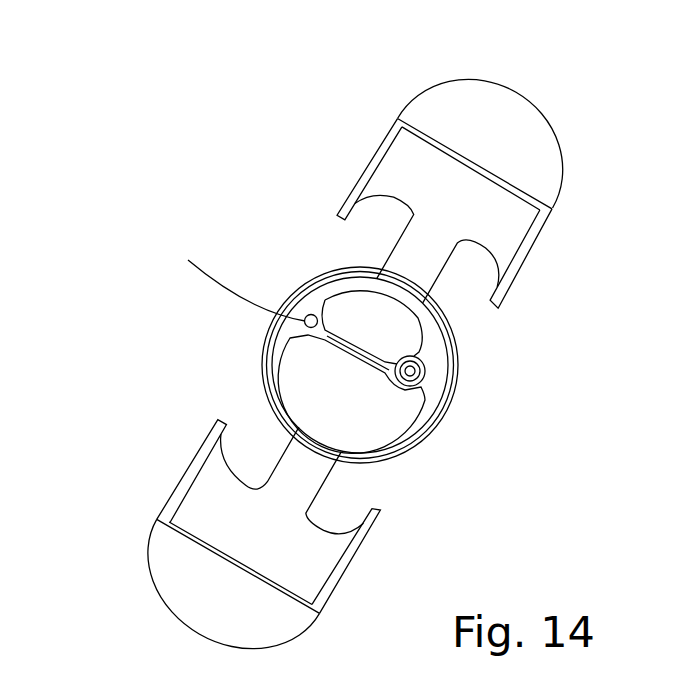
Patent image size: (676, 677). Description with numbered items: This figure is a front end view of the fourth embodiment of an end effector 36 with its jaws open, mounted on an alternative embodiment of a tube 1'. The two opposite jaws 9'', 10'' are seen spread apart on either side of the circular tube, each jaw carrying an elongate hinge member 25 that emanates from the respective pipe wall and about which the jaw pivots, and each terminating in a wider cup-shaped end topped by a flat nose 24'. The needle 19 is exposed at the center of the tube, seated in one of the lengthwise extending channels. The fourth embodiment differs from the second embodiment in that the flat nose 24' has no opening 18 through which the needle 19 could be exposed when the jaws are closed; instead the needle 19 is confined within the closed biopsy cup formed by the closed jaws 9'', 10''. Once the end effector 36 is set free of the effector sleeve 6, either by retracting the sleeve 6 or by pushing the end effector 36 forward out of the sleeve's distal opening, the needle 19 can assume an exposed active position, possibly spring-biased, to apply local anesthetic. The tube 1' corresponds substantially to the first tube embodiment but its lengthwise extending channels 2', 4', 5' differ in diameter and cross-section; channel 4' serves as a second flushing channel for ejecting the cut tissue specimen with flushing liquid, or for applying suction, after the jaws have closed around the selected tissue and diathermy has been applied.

The end effector 36 is at (152, 286).
The effector sleeve 6 is at (447, 388).
The tube 1' is at (397, 365).
The lengthwise extending channel 2' is at (340, 241).
The lengthwise extending channel 4' is at (297, 394).
The lengthwise extending channel 5' is at (417, 439).
The needle 19 is at (415, 385).
The opening 18 is at (420, 370).
The flat nose 24' is at (496, 117).
The jaw 9'' is at (476, 204).
The jaw 10'' is at (211, 546).
The elongate hinge member 25 is at (352, 314).